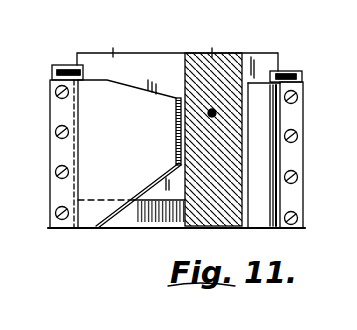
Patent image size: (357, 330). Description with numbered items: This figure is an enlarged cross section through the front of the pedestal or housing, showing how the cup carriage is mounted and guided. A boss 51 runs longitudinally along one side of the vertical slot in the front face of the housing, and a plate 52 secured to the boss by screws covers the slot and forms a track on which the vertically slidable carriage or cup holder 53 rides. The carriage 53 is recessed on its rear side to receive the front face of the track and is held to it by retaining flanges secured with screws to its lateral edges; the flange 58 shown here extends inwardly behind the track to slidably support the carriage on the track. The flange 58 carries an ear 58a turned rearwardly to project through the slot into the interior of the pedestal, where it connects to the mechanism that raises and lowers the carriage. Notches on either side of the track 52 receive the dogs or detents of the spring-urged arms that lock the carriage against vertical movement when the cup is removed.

The boss 51 is at (226, 52).
The plate 52 is at (148, 51).
The carriage 53 is at (132, 222).
The retaining flange 58 is at (79, 226).
The ear 58a is at (177, 130).